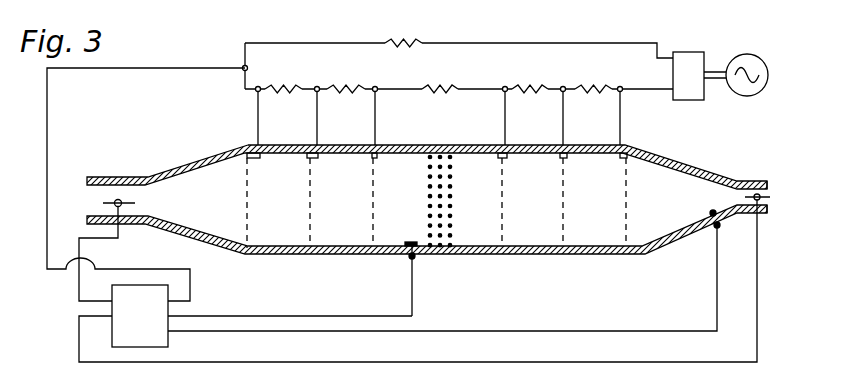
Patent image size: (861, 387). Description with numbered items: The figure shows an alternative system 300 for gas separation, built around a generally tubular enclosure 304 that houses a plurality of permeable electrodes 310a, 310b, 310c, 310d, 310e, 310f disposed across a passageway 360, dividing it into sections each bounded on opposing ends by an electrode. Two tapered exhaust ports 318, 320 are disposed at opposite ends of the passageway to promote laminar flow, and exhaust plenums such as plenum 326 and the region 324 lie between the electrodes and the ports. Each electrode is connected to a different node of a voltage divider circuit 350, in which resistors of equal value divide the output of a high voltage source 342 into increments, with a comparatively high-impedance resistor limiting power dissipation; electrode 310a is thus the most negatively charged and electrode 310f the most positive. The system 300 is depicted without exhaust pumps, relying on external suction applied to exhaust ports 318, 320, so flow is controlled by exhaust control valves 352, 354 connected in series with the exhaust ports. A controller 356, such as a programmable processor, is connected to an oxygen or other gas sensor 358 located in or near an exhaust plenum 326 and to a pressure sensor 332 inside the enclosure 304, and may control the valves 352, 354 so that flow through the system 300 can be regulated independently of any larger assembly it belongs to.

The system for gas separation 300 is at (216, 42).
The tubular enclosure 304 is at (663, 155).
The permeable electrode 310a is at (247, 228).
The permeable electrode 310b is at (310, 226).
The permeable electrode 310c is at (373, 226).
The permeable electrode 310d is at (502, 227).
The permeable electrode 310e is at (563, 228).
The permeable electrode 310f is at (622, 224).
The exhaust port 318 is at (88, 186).
The exhaust port 320 is at (772, 190).
The first region 324 is at (210, 207).
The exhaust plenum 326 is at (683, 209).
The pressure sensor 332 is at (440, 255).
The high voltage source 342 is at (718, 52).
The voltage divider circuit 350 is at (350, 40).
The exhaust control valve 352 is at (123, 185).
The exhaust control valve 354 is at (770, 203).
The controller 356 is at (127, 331).
The gas sensor 358 is at (712, 212).
The passageway 360 is at (402, 177).